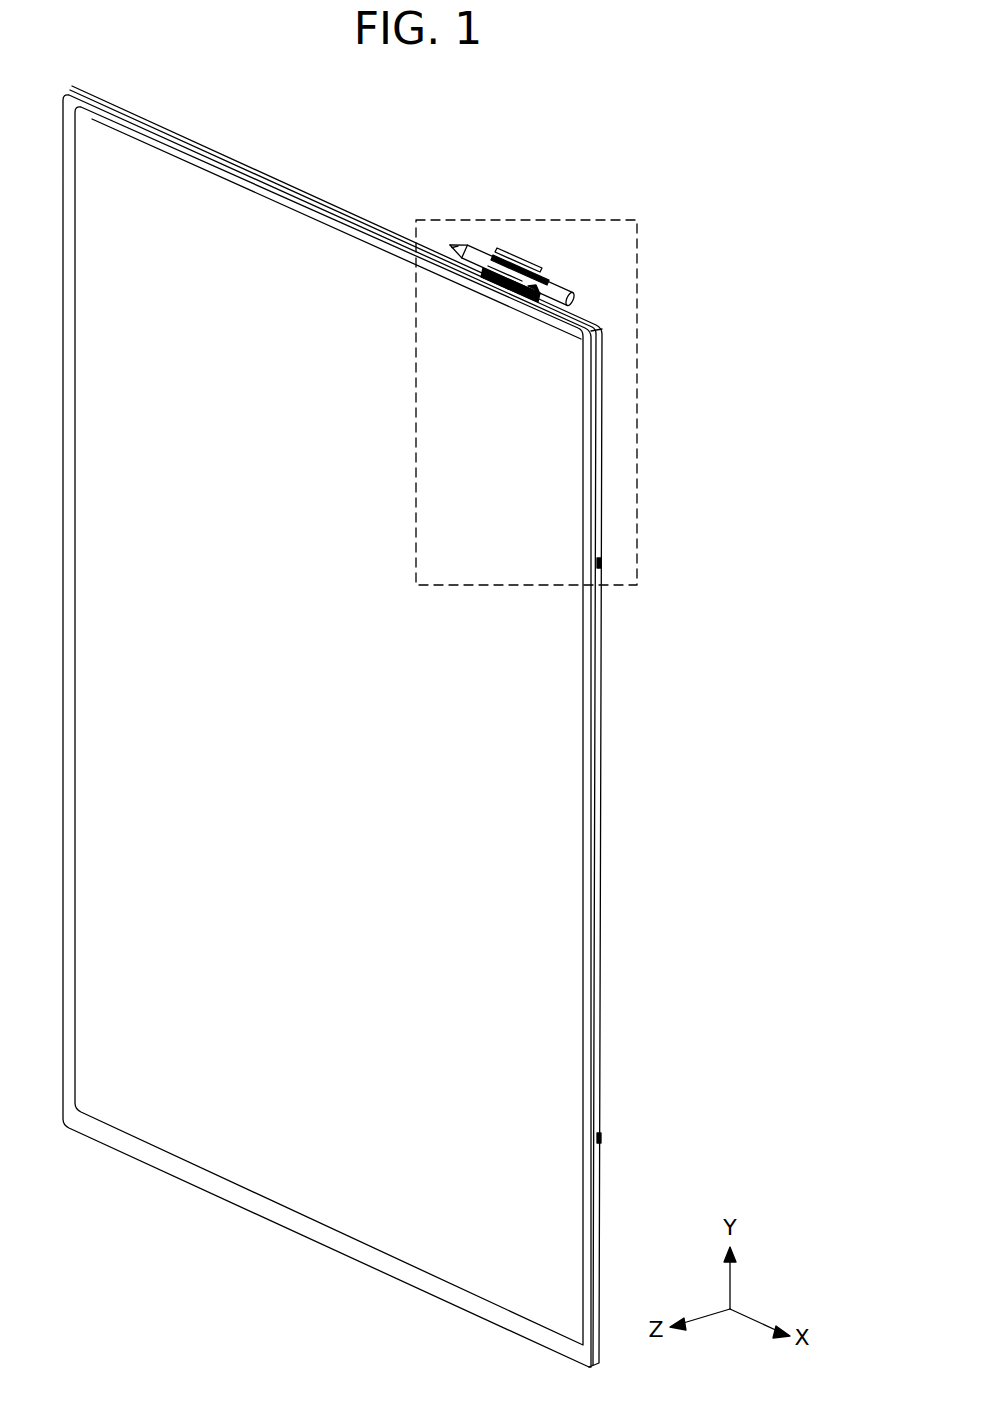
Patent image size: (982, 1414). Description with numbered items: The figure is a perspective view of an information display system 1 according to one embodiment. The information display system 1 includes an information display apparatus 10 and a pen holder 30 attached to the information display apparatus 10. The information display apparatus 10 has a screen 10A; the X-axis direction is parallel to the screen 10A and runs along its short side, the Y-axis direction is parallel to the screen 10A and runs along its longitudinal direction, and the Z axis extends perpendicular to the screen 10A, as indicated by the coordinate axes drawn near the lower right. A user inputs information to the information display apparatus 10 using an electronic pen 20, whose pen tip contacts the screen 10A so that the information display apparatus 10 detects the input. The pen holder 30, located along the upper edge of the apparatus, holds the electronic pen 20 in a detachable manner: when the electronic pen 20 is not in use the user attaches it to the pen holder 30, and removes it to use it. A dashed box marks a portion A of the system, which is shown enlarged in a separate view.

The information display system 1 is at (417, 148).
The information display apparatus 10 is at (396, 222).
The screen 10A is at (537, 916).
The electronic pen 20 is at (562, 280).
The pen holder 30 is at (510, 257).
The portion A is at (640, 510).